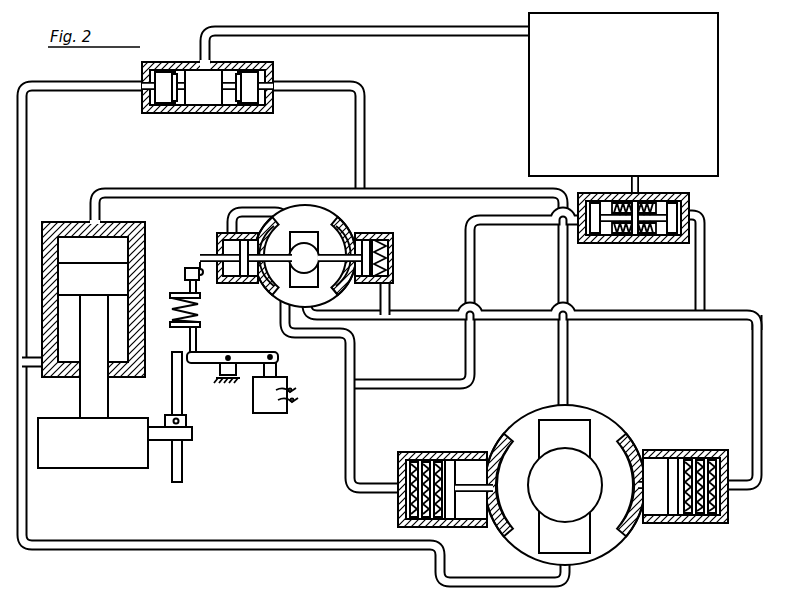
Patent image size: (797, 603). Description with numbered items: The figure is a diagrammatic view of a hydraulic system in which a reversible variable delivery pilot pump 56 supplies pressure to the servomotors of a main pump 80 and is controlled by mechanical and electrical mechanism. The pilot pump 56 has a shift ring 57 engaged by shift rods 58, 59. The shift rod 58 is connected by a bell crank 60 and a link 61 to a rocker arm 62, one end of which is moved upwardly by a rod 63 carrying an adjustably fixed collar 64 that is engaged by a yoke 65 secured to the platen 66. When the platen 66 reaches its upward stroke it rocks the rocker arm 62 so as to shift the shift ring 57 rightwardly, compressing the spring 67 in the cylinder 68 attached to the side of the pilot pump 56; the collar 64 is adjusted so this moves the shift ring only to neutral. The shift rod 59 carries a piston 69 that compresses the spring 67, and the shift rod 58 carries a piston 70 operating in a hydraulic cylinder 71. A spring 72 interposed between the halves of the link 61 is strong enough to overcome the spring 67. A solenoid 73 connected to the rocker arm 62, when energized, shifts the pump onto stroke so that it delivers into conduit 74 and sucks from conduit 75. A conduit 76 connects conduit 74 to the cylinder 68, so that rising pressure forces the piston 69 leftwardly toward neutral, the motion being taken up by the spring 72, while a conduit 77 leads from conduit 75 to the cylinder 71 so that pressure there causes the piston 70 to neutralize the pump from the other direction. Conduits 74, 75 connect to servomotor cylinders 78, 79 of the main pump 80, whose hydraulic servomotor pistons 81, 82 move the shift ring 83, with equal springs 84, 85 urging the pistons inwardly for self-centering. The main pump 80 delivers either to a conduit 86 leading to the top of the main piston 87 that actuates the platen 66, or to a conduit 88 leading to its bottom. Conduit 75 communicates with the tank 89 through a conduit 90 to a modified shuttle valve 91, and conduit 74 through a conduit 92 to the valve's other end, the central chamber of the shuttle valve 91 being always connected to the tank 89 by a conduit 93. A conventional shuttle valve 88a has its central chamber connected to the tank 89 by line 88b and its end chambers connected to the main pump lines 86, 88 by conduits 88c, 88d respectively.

The pilot pump 56 is at (313, 255).
The shift ring 57 is at (340, 213).
The shift rod 58 is at (206, 252).
The shift rod 59 is at (352, 289).
The bell crank 60 is at (193, 266).
The link 61 is at (184, 276).
The rocker arm 62 is at (200, 342).
The rod 63 is at (186, 378).
The collar 64 is at (191, 398).
The yoke 65 is at (196, 422).
The platen 66 is at (80, 450).
The spring 67 is at (368, 245).
The cylinder 68 is at (390, 244).
The piston 69 is at (372, 262).
The piston 70 is at (232, 284).
The hydraulic cylinder 71 is at (262, 295).
The spring 72 is at (202, 316).
The solenoid 73 is at (290, 364).
The conduit 74 is at (407, 326).
The conduit 75 is at (356, 370).
The conduit 76 is at (392, 300).
The conduit 77 is at (228, 216).
The servomotor cylinder 78 is at (703, 472).
The servomotor cylinder 79 is at (517, 475).
The main pump 80 is at (608, 552).
The hydraulic servomotor piston 81 is at (672, 465).
The hydraulic servomotor piston 82 is at (452, 468).
The shift ring 83 is at (640, 450).
The spring 84 is at (708, 462).
The spring 85 is at (434, 452).
The conduit 86 is at (569, 360).
The main piston 87 is at (70, 285).
The conduit 88 is at (165, 545).
The shuttle valve 88a is at (238, 115).
The line 88b is at (378, 37).
The conduit 88c is at (365, 140).
The conduit 88d is at (22, 170).
The tank 89 is at (620, 113).
The conduit 90 is at (476, 272).
The shuttle valve 91 is at (628, 243).
The conduit 92 is at (704, 270).
The conduit 93 is at (640, 186).